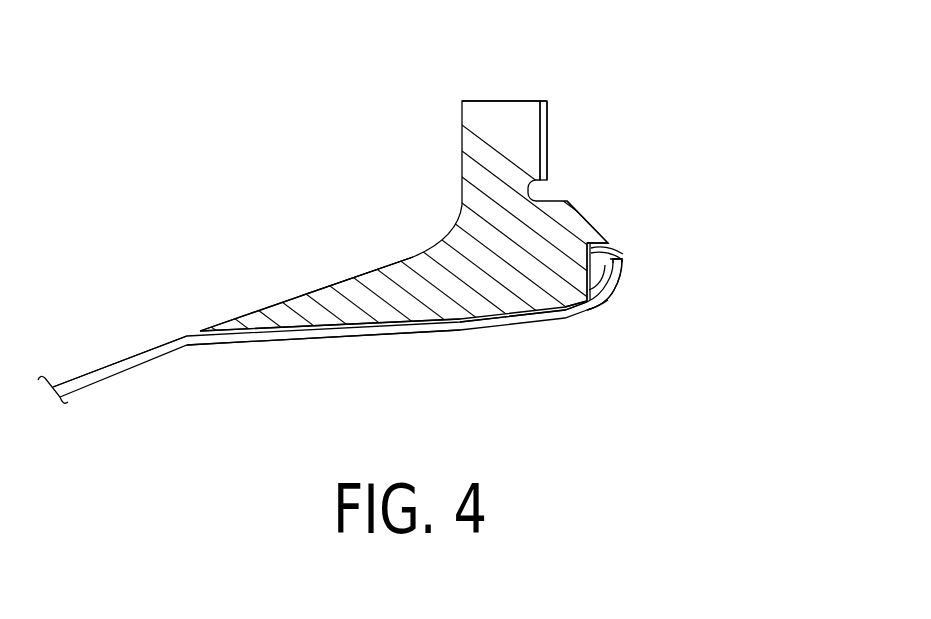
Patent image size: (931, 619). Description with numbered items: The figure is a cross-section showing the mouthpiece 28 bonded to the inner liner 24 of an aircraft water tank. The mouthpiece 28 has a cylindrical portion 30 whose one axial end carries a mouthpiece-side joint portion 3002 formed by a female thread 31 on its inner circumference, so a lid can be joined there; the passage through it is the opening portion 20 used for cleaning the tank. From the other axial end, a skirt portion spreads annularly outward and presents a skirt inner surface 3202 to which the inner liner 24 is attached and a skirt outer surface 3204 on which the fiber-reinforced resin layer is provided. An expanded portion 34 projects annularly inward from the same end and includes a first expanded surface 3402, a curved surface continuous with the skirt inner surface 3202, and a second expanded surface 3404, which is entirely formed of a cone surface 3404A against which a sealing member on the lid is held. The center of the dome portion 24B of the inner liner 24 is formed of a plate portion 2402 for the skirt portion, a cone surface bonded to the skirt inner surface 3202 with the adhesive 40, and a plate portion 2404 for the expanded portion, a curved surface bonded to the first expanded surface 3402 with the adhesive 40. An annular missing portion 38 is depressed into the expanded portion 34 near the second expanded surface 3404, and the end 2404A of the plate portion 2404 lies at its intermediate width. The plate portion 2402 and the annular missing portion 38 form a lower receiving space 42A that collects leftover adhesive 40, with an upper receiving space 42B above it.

The opening portion 20 is at (777, 232).
The inner liner 24 is at (158, 357).
The dome portion 24B is at (132, 384).
The mouthpiece 28 is at (502, 100).
The cylindrical portion 30 is at (500, 147).
The female thread 31 is at (548, 127).
The mouthpiece-side joint portion 3002 is at (638, 113).
The expanded portion 34 is at (553, 255).
The annular missing portion 38 is at (609, 242).
The adhesive 40 is at (380, 317).
The lower receiving space 42A is at (602, 309).
The upper receiving space 42B is at (613, 256).
The plate portion for skirt portion 2402 is at (373, 339).
The plate portion for expanded portion 2404 is at (614, 295).
The end of plate portion for expanded portion 2404A is at (631, 262).
The skirt inner surface 3202 is at (314, 334).
The skirt outer surface 3204 is at (315, 291).
The first expanded surface 3402 is at (560, 320).
The second expanded surface 3404 is at (590, 247).
The cone surface 3404A is at (668, 197).